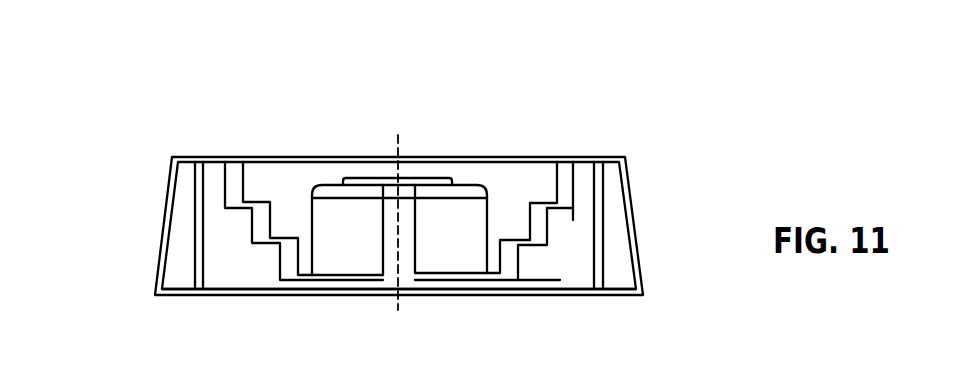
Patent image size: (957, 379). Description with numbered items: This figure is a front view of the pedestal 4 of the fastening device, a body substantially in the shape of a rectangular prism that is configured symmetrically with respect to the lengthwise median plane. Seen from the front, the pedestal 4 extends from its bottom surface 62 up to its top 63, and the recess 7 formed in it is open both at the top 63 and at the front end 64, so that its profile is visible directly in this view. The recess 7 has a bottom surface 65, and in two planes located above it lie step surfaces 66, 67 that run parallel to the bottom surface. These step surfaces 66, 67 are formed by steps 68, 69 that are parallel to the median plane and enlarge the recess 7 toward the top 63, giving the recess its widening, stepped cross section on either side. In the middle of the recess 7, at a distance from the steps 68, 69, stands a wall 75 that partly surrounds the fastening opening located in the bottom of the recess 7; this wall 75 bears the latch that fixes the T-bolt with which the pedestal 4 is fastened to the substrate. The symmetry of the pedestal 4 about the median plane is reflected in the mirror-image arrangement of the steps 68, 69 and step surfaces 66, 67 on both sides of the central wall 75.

The pedestal 4 is at (153, 224).
The recess 7 is at (283, 187).
The bottom surface 62 is at (308, 293).
The top 63 is at (595, 158).
The front end 64 is at (227, 257).
The bottom surface 65 is at (339, 272).
The step surface 66 is at (514, 236).
The step surface 67 is at (546, 202).
The step 68 is at (533, 257).
The step 69 is at (558, 218).
The wall 75 is at (437, 229).